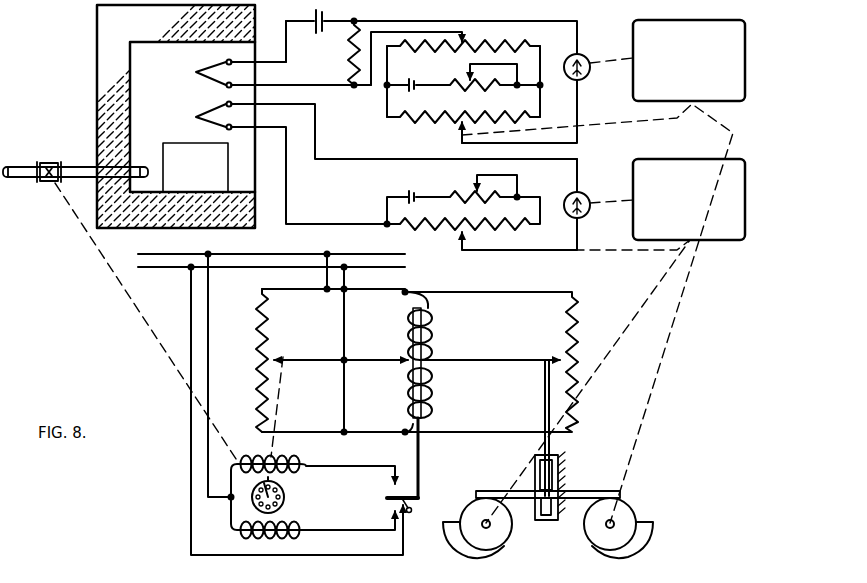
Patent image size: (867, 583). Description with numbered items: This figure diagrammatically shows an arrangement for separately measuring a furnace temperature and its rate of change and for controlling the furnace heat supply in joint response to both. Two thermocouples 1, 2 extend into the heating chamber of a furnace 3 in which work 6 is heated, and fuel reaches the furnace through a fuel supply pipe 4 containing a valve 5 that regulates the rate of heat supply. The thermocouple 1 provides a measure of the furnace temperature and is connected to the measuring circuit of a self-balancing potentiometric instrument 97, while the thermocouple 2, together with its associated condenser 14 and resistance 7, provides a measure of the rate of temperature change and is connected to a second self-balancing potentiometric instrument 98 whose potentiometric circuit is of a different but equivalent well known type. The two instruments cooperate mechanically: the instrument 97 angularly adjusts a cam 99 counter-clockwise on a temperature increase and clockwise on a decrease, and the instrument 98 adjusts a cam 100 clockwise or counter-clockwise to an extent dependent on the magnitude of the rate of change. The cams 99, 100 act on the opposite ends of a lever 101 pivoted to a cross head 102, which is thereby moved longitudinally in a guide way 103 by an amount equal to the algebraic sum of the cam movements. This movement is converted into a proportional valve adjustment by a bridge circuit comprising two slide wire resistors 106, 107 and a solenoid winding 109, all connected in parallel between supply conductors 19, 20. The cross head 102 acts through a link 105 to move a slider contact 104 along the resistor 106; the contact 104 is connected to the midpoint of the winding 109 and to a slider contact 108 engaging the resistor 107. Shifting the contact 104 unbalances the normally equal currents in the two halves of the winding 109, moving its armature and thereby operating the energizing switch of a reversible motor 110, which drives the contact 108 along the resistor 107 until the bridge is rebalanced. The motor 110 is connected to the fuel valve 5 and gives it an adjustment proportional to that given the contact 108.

The thermocouple 1 is at (208, 108).
The thermocouple 2 is at (210, 62).
The furnace 3 is at (96, 74).
The furnace fuel supply pipe 4 is at (88, 166).
The valve 5 is at (49, 163).
The work 6 is at (178, 146).
The resistance 7 is at (350, 66).
The condenser 14 is at (318, 10).
The supply conductor 19 is at (246, 256).
The supply conductor 20 is at (266, 270).
The self-balancing potentiometric instrument 97 is at (660, 162).
The self-balancing potentiometric instrument 98 is at (640, 30).
The cam 99 is at (448, 546).
The cam 100 is at (646, 540).
The lever 101 is at (580, 490).
The cross head 102 is at (562, 476).
The guide way 103 is at (548, 522).
The slider contact 104 is at (558, 358).
The link 105 is at (544, 416).
The slide wire resistor 106 is at (575, 332).
The slide wire resistor 107 is at (268, 326).
The slider contact 108 is at (280, 358).
The solenoid winding 109 is at (412, 346).
The reversible motor 110 is at (318, 498).